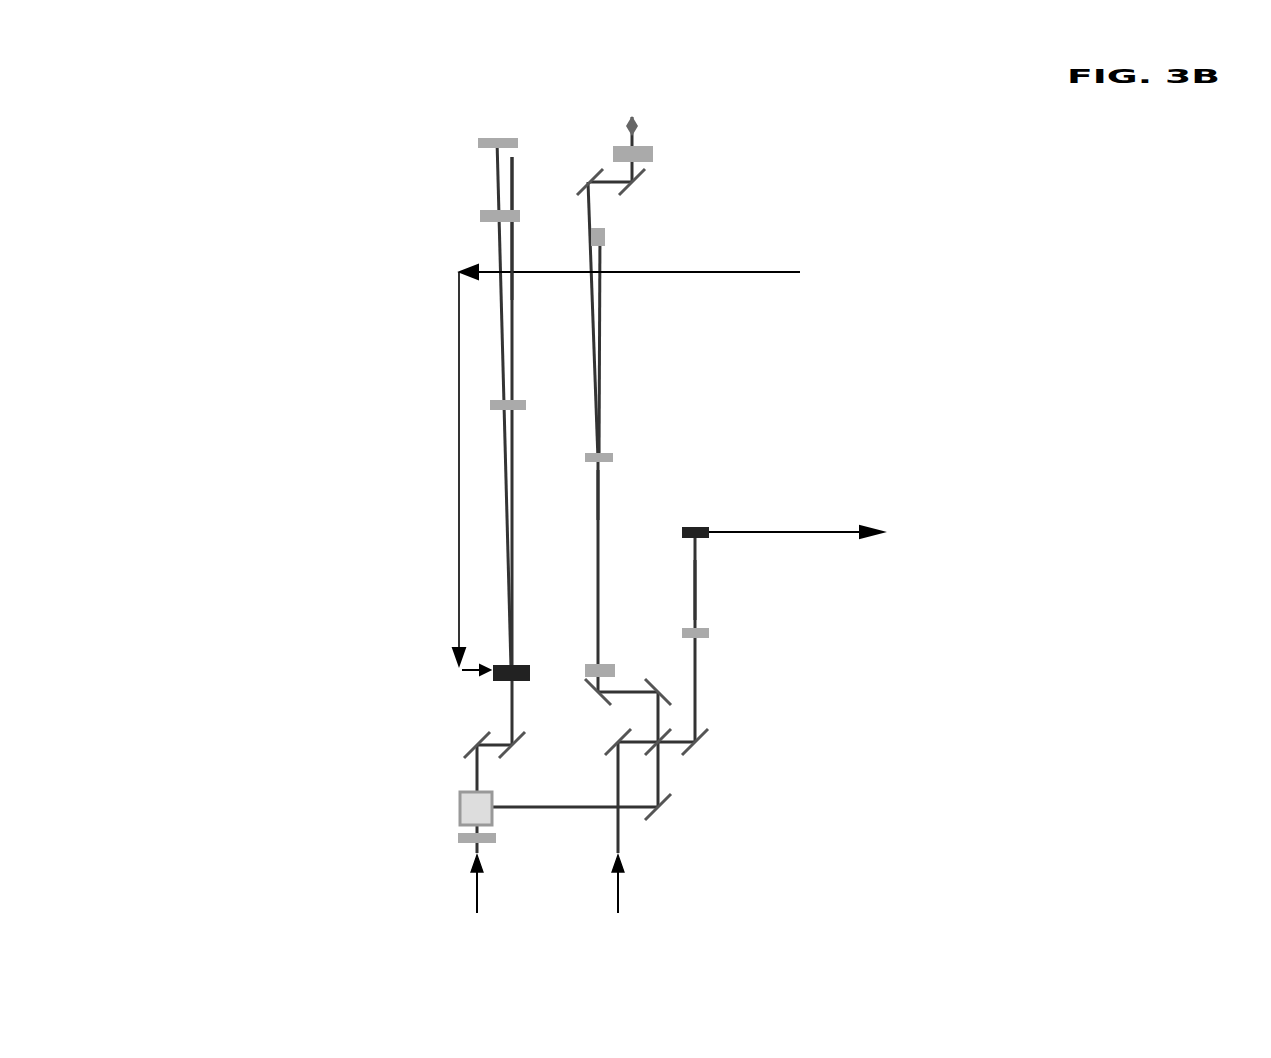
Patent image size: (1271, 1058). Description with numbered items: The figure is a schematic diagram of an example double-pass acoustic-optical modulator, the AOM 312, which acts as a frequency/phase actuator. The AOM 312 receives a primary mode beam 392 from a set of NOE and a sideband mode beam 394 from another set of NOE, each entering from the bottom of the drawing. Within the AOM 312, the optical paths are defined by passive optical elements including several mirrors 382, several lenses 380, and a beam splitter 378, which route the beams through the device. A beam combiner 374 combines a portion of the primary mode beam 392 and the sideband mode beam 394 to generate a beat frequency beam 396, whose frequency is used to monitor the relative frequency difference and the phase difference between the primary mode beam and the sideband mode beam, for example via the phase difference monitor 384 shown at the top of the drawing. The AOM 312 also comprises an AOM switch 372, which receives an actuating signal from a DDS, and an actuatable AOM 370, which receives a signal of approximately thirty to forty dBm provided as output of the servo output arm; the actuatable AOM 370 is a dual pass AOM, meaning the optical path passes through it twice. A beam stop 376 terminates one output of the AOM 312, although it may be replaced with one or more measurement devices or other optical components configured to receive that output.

The AOM 312 is at (559, 517).
The actuatable AOM 370 is at (474, 651).
The AOM switch 372 is at (641, 438).
The beam combiner 374 is at (712, 784).
The beam stop 376 is at (559, 209).
The beam splitter 378 is at (433, 823).
The lenses 380 is at (600, 529).
The mirrors 382 is at (594, 480).
The phase difference monitor 384 is at (675, 103).
The primary mode beam 392 is at (477, 908).
The sideband mode beam 394 is at (620, 910).
The beat frequency beam 396 is at (690, 545).